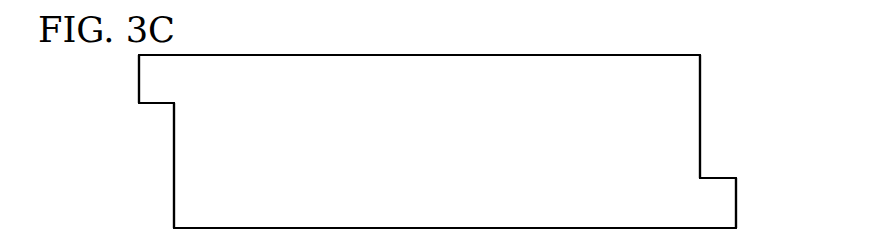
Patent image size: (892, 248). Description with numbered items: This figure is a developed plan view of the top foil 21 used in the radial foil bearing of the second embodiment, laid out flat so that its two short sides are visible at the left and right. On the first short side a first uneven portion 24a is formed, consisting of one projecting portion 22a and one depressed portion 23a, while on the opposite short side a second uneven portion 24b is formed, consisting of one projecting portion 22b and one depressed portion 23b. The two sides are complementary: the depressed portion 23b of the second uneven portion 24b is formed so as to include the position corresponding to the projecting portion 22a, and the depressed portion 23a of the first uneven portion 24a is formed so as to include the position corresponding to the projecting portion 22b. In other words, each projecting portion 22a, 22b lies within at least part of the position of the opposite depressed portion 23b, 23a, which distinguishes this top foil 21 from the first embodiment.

The top foil 21 is at (496, 72).
The first projecting portion 22a is at (736, 202).
The second projecting portion 22b is at (152, 78).
The first depressed portion 23a is at (700, 90).
The second depressed portion 23b is at (188, 176).
The first uneven portion 24a is at (794, 68).
The second uneven portion 24b is at (80, 56).